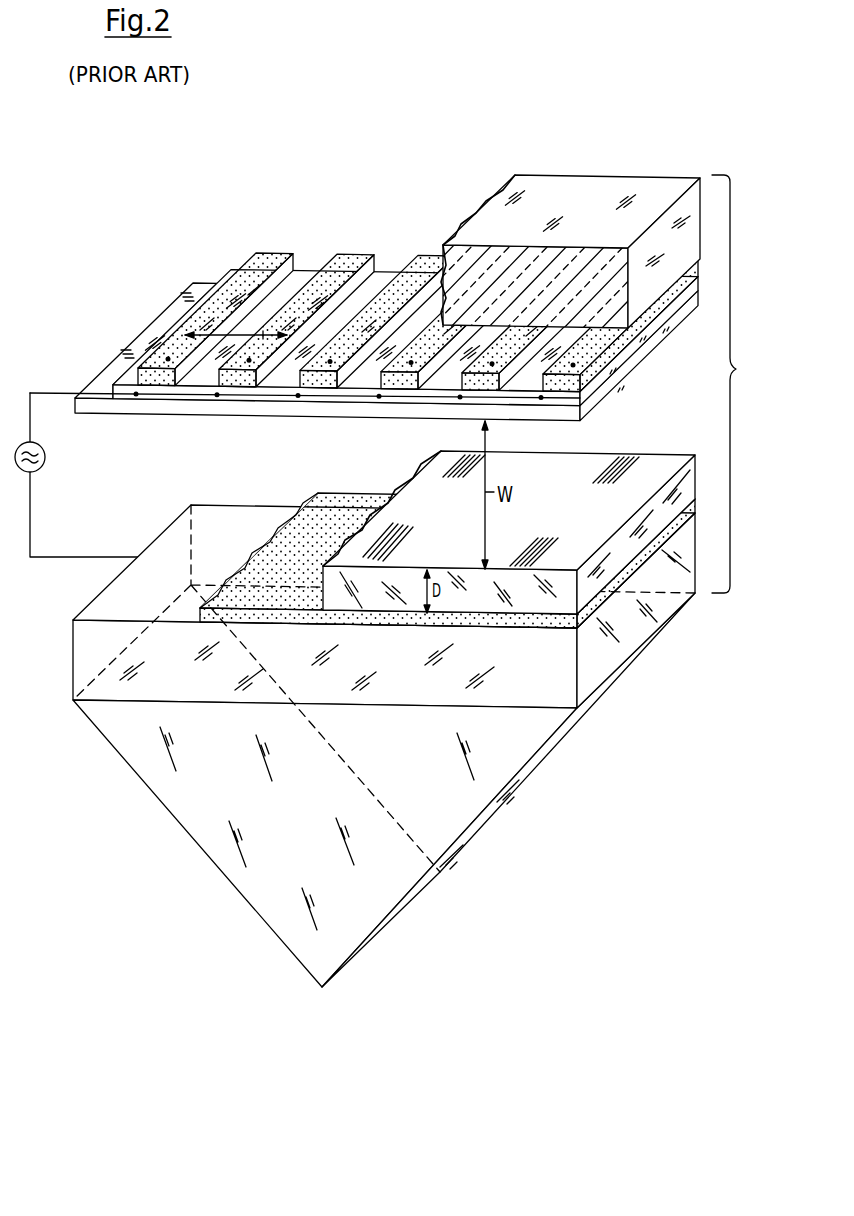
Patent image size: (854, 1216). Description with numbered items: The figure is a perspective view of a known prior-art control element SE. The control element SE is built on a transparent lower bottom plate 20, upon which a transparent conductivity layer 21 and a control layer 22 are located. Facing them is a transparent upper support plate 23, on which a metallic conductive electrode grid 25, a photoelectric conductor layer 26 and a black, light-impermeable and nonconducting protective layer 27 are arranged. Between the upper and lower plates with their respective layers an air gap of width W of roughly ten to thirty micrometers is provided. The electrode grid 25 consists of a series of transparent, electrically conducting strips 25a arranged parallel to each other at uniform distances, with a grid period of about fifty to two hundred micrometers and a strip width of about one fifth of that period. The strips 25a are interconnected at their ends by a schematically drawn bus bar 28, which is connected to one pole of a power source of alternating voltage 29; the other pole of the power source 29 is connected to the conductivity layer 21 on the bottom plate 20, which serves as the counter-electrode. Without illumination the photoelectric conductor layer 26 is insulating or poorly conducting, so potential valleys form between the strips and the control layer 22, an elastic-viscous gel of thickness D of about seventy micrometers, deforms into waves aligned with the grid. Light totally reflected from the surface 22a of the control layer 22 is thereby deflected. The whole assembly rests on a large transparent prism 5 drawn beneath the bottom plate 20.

The prism 5 is at (384, 725).
The transparent lower bottom plate 20 is at (215, 515).
The transparent conductivity layer 21 is at (340, 510).
The control layer 22 is at (509, 513).
The surface of control layer 22a is at (647, 468).
The transparent upper support plate 23 is at (563, 183).
The metallic conductive electrode grid 25 is at (418, 304).
The transparent electrically conducting strip 25a is at (248, 277).
The photoelectric conductor layer 26 is at (178, 322).
The protective layer 27 is at (137, 338).
The bus bar 28 is at (68, 391).
The power source of alternating voltage 29 is at (41, 464).
The control element SE is at (736, 384).